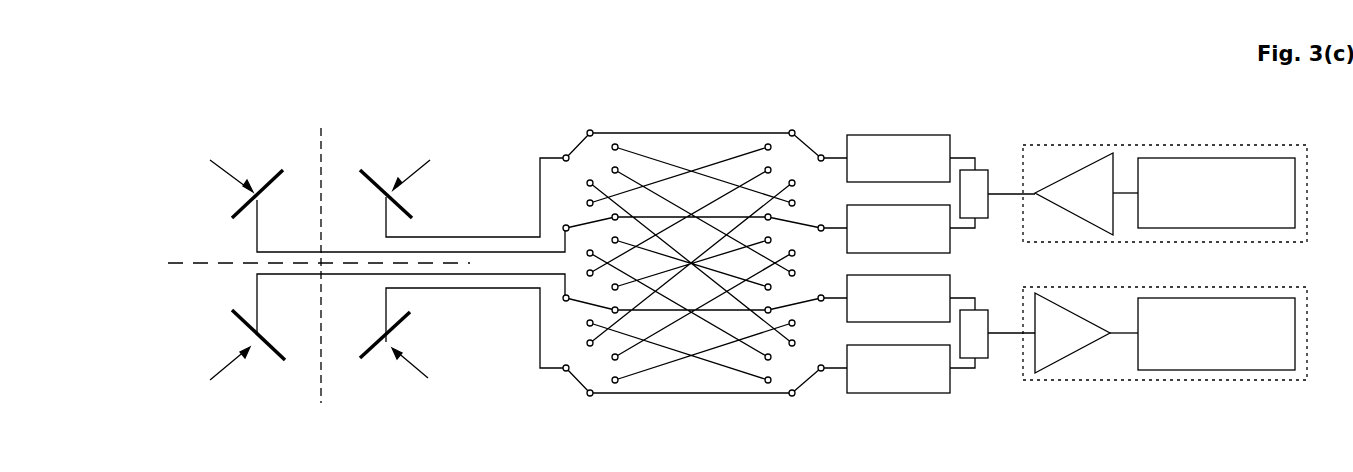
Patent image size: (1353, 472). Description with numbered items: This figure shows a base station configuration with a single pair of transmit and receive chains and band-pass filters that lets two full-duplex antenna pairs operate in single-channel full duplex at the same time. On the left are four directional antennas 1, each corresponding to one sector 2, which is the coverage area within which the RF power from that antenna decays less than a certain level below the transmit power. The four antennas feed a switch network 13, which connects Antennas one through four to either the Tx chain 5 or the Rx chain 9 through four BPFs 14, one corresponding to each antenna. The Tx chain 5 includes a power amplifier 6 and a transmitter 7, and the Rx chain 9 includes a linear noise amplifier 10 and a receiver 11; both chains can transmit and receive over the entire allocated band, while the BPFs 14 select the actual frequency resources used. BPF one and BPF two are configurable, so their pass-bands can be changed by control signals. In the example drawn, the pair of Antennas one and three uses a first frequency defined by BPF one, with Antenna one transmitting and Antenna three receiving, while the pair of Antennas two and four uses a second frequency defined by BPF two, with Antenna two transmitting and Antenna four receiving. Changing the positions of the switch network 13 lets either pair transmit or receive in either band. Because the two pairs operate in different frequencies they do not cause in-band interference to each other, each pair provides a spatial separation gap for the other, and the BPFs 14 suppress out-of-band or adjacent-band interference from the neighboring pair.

The directional antenna 1 is at (342, 181).
The sector 2 is at (342, 352).
The Tx chain 5 is at (1165, 182).
The power amplifier 6 is at (1074, 194).
The transmitter 7 is at (1216, 193).
The Rx chain 9 is at (1165, 348).
The linear noise amplifier 10 is at (1072, 335).
The receiver 11 is at (1216, 334).
The switch network 13 is at (693, 276).
The band-pass filter 14 is at (887, 264).